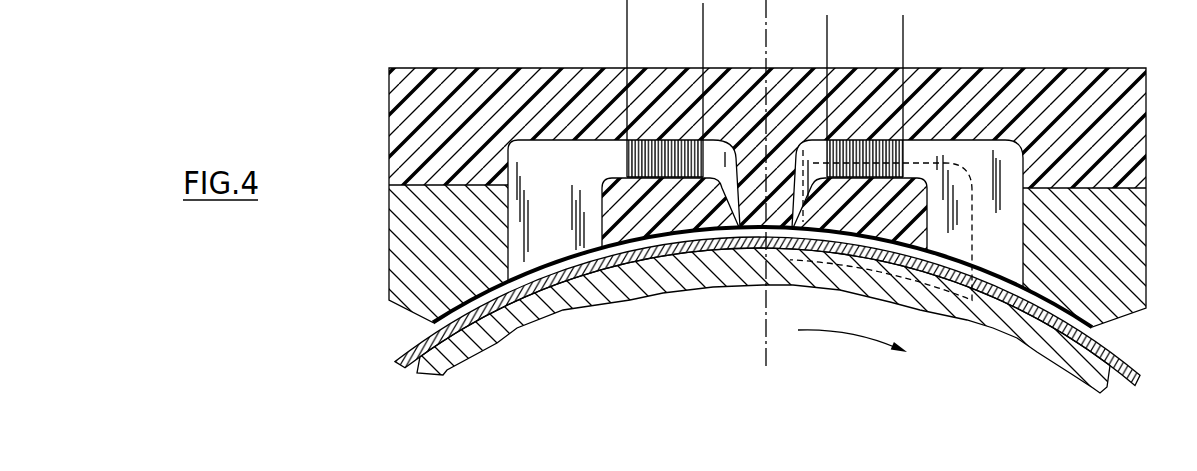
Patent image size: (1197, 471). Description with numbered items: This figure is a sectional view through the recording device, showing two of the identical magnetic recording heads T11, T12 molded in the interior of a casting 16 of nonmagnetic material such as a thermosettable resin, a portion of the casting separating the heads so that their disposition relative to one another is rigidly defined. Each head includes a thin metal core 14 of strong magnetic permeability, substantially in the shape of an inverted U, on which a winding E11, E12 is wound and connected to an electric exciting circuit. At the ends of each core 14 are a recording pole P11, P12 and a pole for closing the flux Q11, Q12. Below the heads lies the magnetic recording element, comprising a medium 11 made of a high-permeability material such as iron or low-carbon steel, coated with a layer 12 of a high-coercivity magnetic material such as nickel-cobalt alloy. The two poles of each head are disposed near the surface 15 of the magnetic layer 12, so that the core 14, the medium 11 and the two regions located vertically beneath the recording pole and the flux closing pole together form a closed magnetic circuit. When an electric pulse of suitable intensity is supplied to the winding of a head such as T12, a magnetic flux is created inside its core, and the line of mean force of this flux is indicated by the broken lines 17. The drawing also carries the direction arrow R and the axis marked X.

The medium 11 is at (1053, 345).
The magnetic layer 12 is at (1105, 351).
The core 14 is at (592, 160).
The surface 15 is at (408, 351).
The casting 16 is at (1128, 137).
The broken lines 17 is at (974, 252).
The recording head T11 is at (553, 162).
The recording head T12 is at (992, 160).
The winding E11 is at (625, 158).
The winding E12 is at (807, 148).
The recording pole P11 is at (738, 229).
The recording pole P12 is at (792, 229).
The flux closing pole Q11 is at (553, 250).
The flux closing pole Q12 is at (1000, 262).
The direction of rotation R is at (852, 346).
The axis X is at (781, 185).